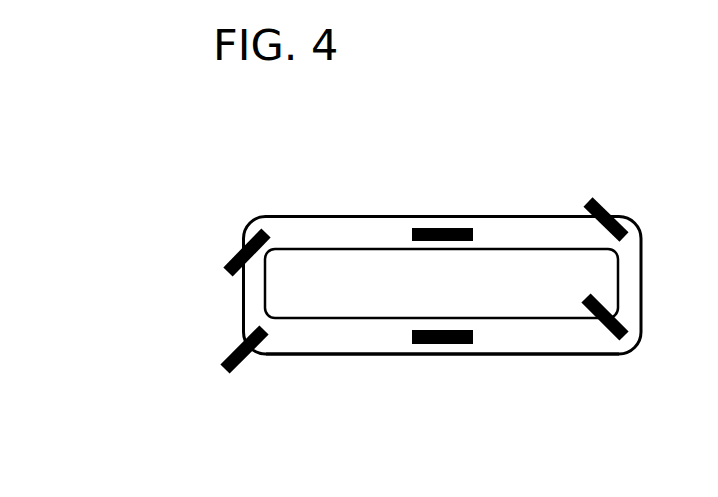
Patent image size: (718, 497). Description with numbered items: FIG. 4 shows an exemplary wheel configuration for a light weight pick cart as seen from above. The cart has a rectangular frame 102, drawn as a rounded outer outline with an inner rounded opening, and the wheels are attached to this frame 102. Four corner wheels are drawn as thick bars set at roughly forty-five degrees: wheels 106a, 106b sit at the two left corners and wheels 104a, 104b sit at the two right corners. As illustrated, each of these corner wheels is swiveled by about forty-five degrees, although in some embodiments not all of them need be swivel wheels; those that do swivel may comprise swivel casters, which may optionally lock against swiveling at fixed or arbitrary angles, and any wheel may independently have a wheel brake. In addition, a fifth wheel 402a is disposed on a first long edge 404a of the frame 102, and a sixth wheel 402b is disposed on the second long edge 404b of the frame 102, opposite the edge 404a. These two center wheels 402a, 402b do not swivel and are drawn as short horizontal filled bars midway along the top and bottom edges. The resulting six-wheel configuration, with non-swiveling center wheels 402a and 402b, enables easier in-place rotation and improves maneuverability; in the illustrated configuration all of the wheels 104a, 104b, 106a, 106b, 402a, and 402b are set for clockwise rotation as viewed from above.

The frame housing 102 is at (628, 278).
The first corner sensor element 104a is at (590, 190).
The second corner sensor element 104b is at (584, 296).
The first left corner element 106a is at (228, 268).
The second left corner element 106b is at (228, 365).
The fifth wheel 402a is at (428, 228).
The sixth wheel 402b is at (448, 345).
The first long edge 404a is at (325, 215).
The second long edge 404b is at (560, 355).